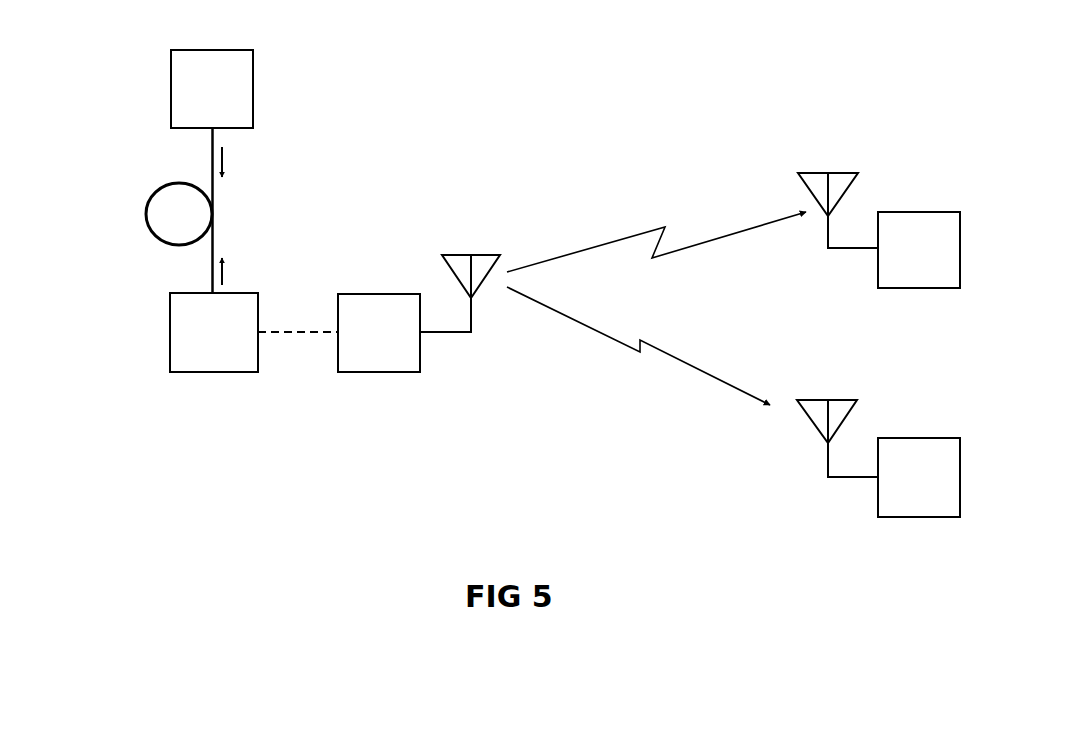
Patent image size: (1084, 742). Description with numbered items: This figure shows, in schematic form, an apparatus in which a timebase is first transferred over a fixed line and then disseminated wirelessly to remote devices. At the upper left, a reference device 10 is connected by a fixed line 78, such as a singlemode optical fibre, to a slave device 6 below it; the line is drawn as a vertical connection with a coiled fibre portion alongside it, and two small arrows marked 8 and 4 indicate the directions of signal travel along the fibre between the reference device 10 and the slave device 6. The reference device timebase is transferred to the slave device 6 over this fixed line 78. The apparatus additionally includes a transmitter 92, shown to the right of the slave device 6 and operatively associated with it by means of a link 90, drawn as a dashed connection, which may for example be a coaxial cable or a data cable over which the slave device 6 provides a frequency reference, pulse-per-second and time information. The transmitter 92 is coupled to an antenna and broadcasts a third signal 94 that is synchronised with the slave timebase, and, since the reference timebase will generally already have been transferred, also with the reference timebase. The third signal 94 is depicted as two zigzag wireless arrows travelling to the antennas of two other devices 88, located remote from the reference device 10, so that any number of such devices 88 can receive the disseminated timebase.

The reference device 10 is at (171, 88).
The fixed line 78 is at (145, 213).
The downstream signal direction 8 is at (226, 157).
The upstream signal direction 4 is at (226, 275).
The slave device 6 is at (170, 331).
The link 90 is at (290, 333).
The transmitter 92 is at (380, 294).
The third signal 94 is at (594, 246).
The other devices 88 is at (920, 212).